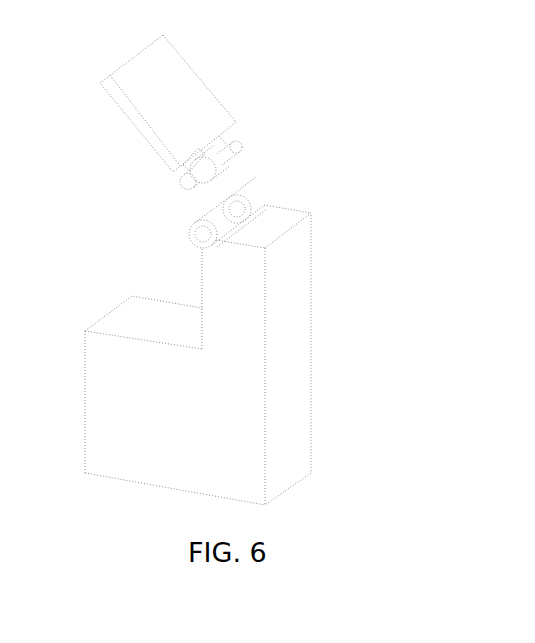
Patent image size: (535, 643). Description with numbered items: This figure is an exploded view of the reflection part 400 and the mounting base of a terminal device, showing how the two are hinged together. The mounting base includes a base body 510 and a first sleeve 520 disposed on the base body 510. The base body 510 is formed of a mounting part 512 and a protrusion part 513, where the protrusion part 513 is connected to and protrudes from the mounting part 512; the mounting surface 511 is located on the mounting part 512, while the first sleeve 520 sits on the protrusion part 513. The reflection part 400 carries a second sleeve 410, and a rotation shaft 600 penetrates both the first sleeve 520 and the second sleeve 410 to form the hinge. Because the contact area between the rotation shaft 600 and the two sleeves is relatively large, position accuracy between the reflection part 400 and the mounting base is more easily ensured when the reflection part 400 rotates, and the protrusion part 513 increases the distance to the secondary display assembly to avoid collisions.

The reflection part 400 is at (205, 99).
The second sleeve 410 is at (216, 170).
The base body 510 is at (232, 355).
The mounting surface 511 is at (123, 317).
The mounting part 512 is at (160, 414).
The protrusion part 513 is at (387, 435).
The first sleeve 520 is at (192, 237).
The rotation shaft 600 is at (238, 147).